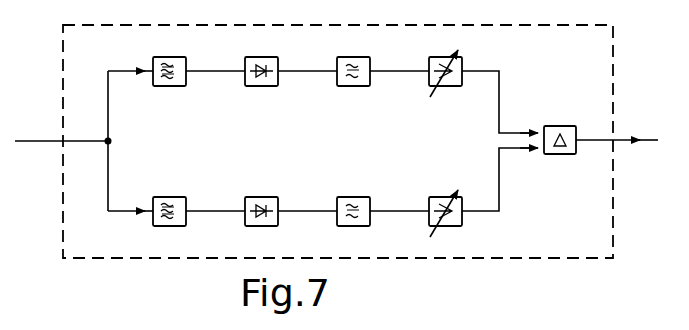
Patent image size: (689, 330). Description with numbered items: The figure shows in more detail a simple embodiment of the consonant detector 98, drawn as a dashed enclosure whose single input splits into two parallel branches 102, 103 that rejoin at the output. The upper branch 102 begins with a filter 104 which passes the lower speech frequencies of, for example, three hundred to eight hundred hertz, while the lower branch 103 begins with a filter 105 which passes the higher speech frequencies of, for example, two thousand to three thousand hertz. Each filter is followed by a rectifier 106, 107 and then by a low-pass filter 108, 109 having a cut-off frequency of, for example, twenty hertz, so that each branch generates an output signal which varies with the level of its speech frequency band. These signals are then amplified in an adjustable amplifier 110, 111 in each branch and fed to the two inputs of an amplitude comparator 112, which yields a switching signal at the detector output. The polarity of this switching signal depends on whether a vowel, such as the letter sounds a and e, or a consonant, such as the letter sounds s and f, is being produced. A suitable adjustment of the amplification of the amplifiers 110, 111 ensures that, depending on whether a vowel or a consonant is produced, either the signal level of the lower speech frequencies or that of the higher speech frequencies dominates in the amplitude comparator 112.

The consonant detector 98 is at (563, 258).
The parallel branch 102 is at (152, 112).
The parallel branch 103 is at (150, 190).
The filter 104 is at (183, 57).
The filter 105 is at (183, 197).
The rectifier 106 is at (275, 57).
The rectifier 107 is at (275, 197).
The low-pass filter 108 is at (374, 46).
The low-pass filter 109 is at (367, 197).
The adjustable amplifier 110 is at (462, 66).
The adjustable amplifier 111 is at (462, 206).
The amplitude comparator 112 is at (562, 126).